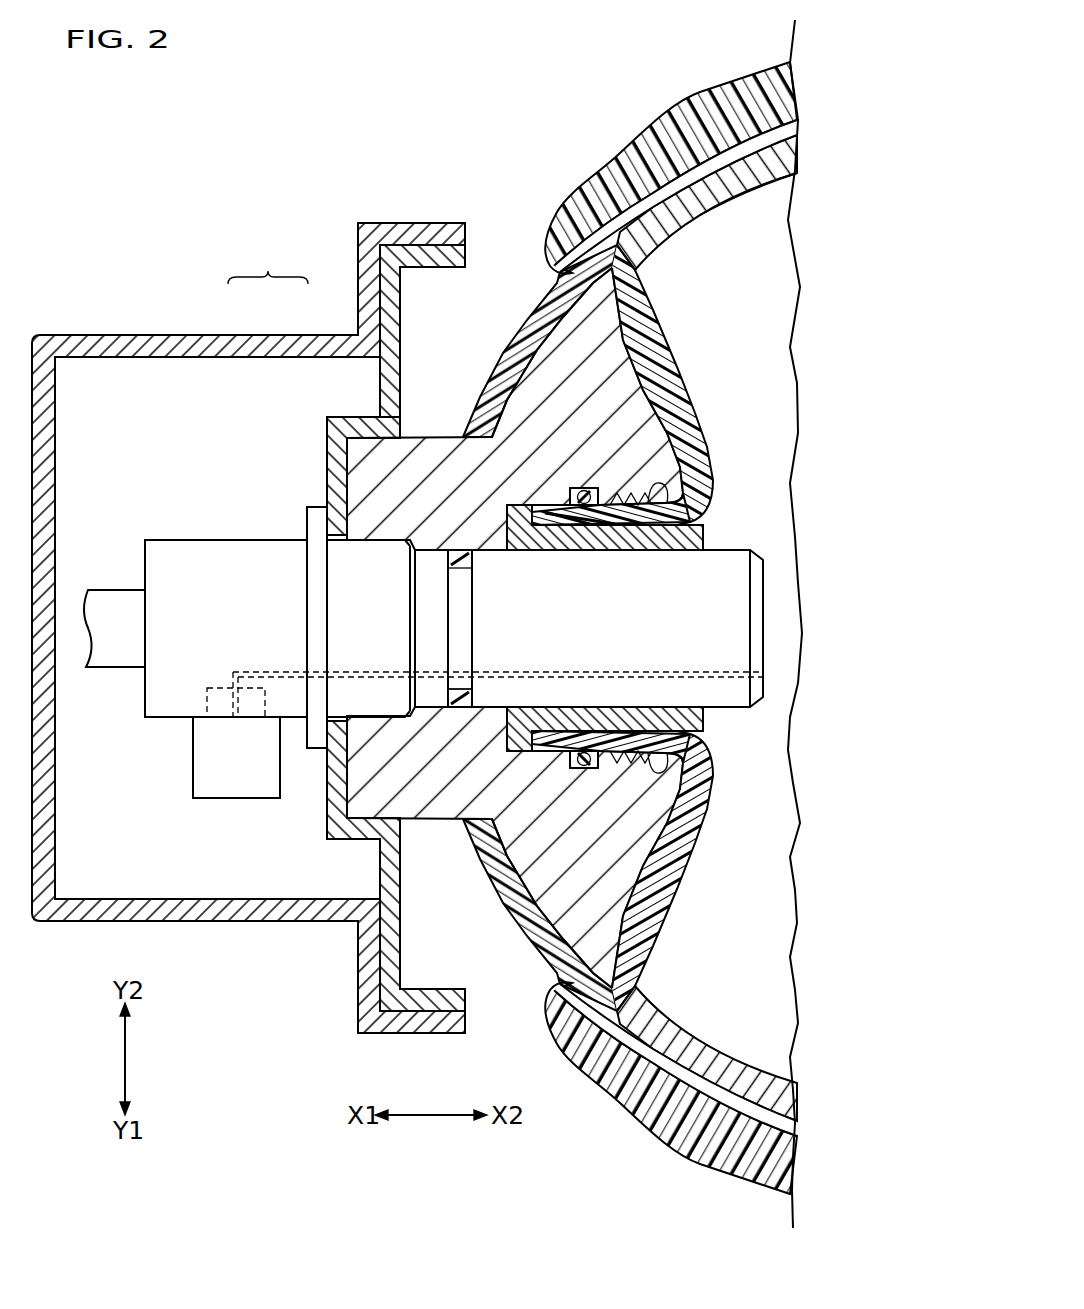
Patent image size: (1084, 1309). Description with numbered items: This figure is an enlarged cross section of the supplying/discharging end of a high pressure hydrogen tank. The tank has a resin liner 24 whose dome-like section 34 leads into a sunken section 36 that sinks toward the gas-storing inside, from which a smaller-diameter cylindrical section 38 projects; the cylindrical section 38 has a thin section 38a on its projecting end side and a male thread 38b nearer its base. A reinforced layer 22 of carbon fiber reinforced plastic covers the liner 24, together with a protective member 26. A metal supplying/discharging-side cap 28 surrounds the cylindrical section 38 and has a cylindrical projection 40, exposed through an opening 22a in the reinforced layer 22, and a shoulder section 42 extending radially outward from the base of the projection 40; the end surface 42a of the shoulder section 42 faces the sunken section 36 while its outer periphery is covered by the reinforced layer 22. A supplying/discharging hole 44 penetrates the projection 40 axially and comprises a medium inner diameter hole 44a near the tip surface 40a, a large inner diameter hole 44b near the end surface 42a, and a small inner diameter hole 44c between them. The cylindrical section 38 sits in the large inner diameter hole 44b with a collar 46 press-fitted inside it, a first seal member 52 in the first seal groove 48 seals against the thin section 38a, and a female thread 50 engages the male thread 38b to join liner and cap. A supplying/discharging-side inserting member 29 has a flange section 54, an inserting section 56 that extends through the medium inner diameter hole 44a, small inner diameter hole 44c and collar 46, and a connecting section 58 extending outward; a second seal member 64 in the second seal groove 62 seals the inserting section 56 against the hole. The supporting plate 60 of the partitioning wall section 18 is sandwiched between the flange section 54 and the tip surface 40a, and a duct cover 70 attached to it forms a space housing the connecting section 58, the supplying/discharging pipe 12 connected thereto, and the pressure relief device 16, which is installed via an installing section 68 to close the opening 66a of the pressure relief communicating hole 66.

The supplying/discharging pipe 12 is at (106, 590).
The pressure relief device 16 is at (247, 777).
The partitioning wall section 18 is at (268, 265).
The reinforced layer 22 is at (771, 145).
The opening 22a is at (463, 807).
The liner 24 is at (748, 185).
The protective member 26 is at (706, 110).
The supplying/discharging-side cap 28 is at (668, 930).
The supplying/discharging-side inserting member 29 is at (784, 612).
The dome-like section 34 is at (711, 205).
The sunken section 36 is at (673, 363).
The cylindrical section 38 is at (556, 552).
The thin section 38a is at (607, 522).
The male thread 38b is at (678, 540).
The projection 40 is at (413, 820).
The tip surface 40a is at (328, 478).
The shoulder section 42 is at (535, 888).
The end surface 42a is at (682, 422).
The supplying/discharging hole 44 is at (375, 722).
The medium inner diameter hole 44a is at (377, 541).
The large inner diameter hole 44b is at (521, 552).
The small inner diameter hole 44c is at (427, 553).
The collar 46 is at (704, 722).
The first seal groove 48 is at (578, 506).
The female thread 50 is at (637, 503).
The first seal member 52 is at (584, 524).
The flange section 54 is at (308, 571).
The inserting section 56 is at (728, 548).
The connecting section 58 is at (168, 540).
The supporting plate 60 is at (330, 432).
The second seal groove 62 is at (470, 620).
The second seal member 64 is at (465, 690).
The pressure relief communicating hole 66 is at (717, 672).
The opening 66a is at (236, 692).
The installing section 68 is at (214, 800).
The duct cover 70 is at (249, 345).